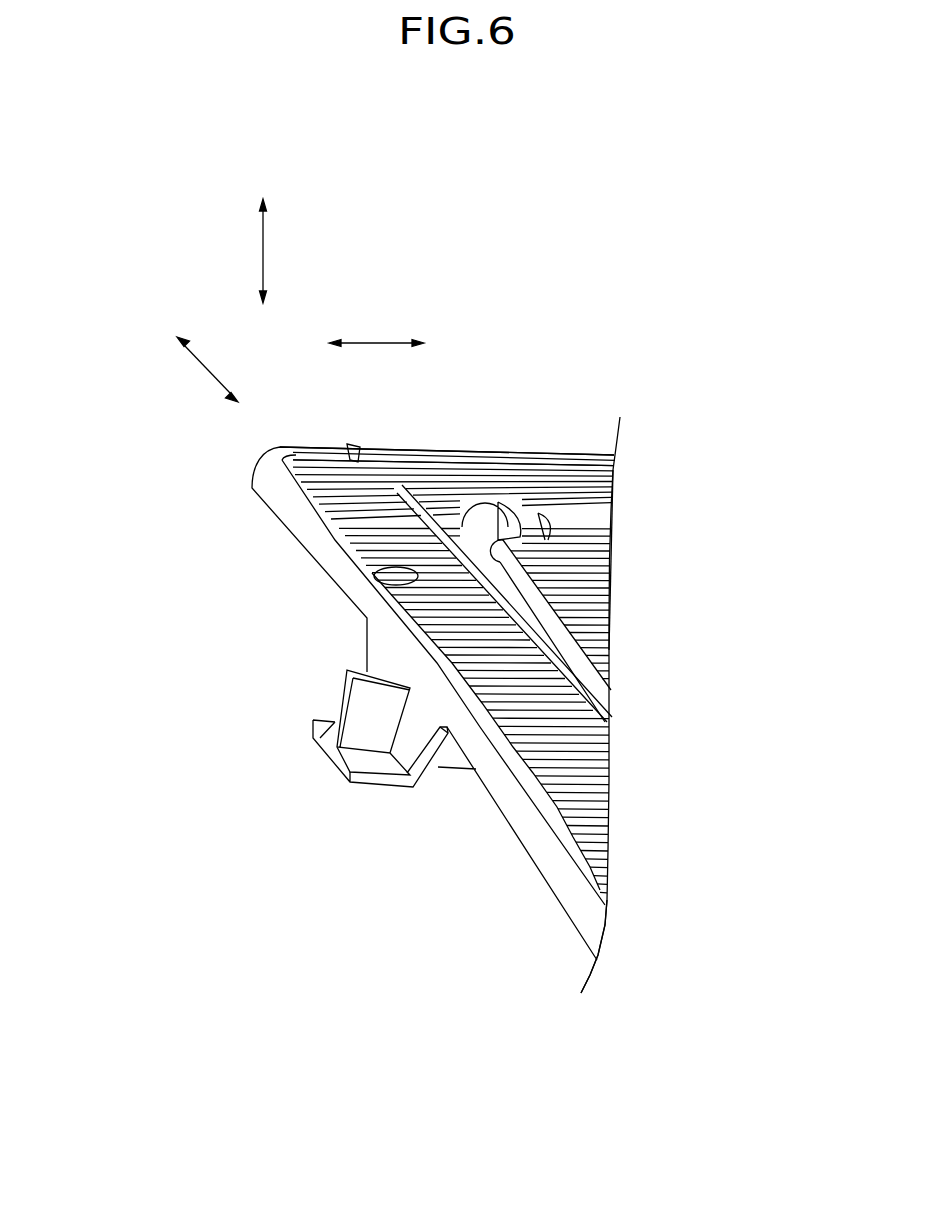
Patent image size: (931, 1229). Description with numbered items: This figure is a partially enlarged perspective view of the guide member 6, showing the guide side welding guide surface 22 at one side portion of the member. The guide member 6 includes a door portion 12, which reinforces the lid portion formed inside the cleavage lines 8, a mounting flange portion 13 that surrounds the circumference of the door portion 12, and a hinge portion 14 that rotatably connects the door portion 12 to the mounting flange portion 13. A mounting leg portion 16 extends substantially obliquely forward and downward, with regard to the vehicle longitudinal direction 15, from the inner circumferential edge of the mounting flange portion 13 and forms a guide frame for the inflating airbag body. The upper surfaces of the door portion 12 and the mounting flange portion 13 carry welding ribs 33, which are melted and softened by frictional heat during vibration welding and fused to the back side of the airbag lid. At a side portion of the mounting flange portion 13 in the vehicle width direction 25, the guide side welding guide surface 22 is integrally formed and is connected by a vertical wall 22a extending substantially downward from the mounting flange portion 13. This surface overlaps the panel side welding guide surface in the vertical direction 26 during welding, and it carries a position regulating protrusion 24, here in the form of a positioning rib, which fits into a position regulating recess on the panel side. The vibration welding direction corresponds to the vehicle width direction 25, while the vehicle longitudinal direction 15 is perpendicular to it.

The guide member 6 is at (760, 442).
The cleavage lines 8 is at (613, 720).
The door portion 12 is at (624, 594).
The mounting flange portion 13 is at (632, 474).
The hinge portion 14 is at (634, 526).
The vehicle longitudinal direction 15 is at (198, 364).
The mounting leg portion 16 is at (538, 938).
The guide side welding guide surface 22 is at (373, 788).
The vertical wall 22a is at (445, 760).
The position regulating protrusion 24 is at (333, 697).
The vehicle width direction 25 is at (377, 343).
The vertical direction 26 is at (263, 255).
The welding ribs 33 is at (598, 615).